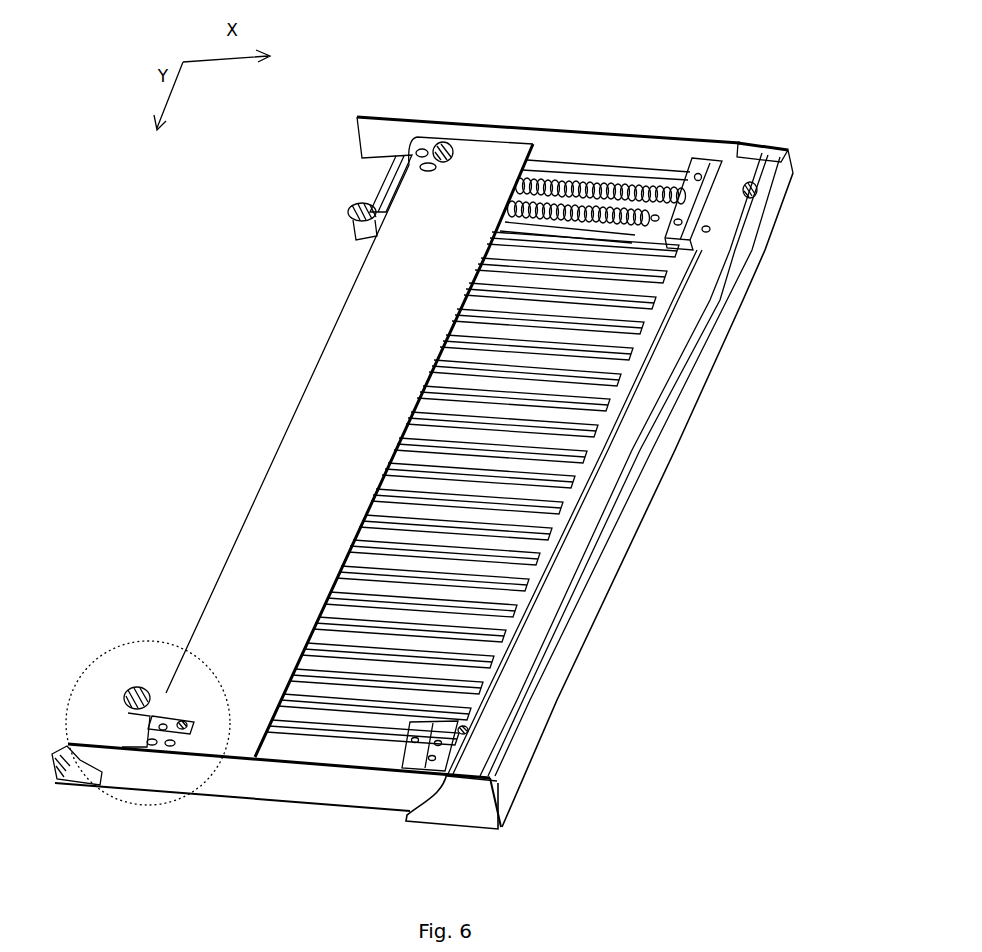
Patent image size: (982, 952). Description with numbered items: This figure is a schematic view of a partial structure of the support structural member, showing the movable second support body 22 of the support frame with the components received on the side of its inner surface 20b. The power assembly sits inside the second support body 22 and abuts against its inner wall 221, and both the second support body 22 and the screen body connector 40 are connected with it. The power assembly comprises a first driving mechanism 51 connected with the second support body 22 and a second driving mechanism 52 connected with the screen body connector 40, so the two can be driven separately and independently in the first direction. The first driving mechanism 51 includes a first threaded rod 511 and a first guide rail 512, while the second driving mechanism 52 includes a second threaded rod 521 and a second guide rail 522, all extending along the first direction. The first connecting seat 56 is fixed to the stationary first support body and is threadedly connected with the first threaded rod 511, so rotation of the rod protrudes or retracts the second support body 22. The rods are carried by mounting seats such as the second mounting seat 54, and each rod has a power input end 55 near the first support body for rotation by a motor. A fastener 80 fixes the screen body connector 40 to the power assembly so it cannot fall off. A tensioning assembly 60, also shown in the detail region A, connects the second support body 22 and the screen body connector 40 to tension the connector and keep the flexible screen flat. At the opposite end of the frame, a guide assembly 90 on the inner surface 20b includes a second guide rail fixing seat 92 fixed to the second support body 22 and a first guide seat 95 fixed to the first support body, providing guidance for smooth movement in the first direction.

The inner surface 20b is at (610, 282).
The second support body 22 is at (645, 492).
The inner wall 221 is at (710, 230).
The screen body connector 40 is at (315, 455).
The first driving mechanism 51 is at (395, 271).
The first threaded rod 511 is at (548, 220).
The first guide rail 512 is at (568, 282).
The second driving mechanism 52 is at (597, 118).
The second threaded rod 521 is at (585, 175).
The second guide rail 522 is at (548, 165).
The second mounting seat 54 is at (758, 173).
The power input end 55 is at (383, 192).
The first connecting seat 56 is at (630, 178).
The tensioning assembly 60 is at (350, 208).
The fastener 80 is at (447, 142).
The guide assembly 90 is at (330, 740).
The second guide rail fixing seat 92 is at (443, 732).
The first guide seat 95 is at (407, 755).
The detail region A is at (167, 624).